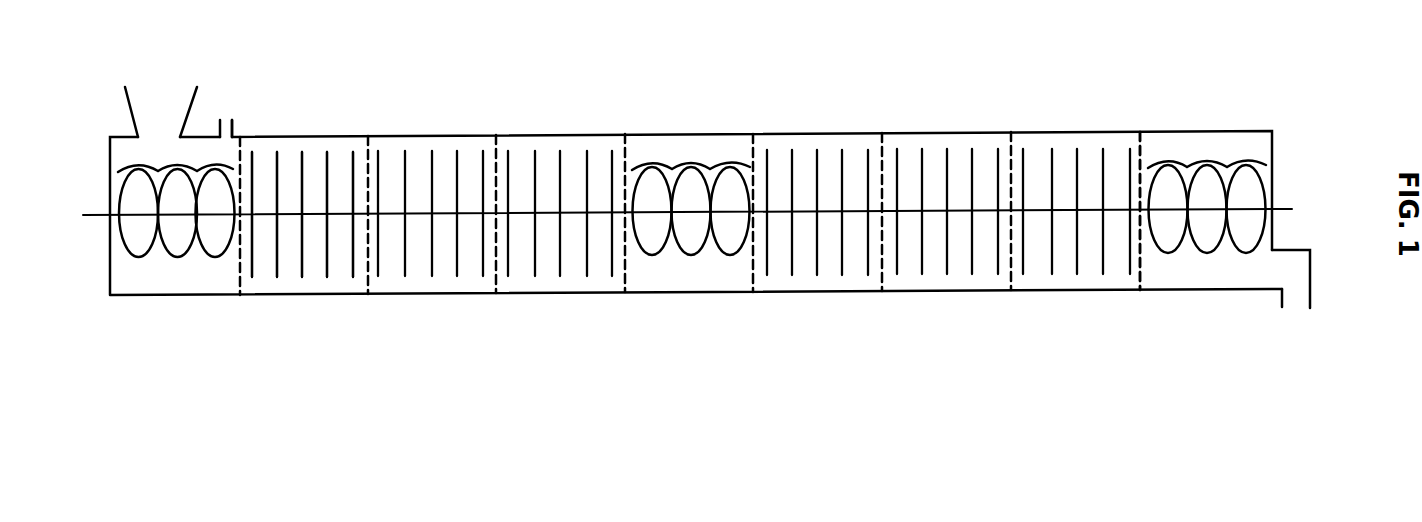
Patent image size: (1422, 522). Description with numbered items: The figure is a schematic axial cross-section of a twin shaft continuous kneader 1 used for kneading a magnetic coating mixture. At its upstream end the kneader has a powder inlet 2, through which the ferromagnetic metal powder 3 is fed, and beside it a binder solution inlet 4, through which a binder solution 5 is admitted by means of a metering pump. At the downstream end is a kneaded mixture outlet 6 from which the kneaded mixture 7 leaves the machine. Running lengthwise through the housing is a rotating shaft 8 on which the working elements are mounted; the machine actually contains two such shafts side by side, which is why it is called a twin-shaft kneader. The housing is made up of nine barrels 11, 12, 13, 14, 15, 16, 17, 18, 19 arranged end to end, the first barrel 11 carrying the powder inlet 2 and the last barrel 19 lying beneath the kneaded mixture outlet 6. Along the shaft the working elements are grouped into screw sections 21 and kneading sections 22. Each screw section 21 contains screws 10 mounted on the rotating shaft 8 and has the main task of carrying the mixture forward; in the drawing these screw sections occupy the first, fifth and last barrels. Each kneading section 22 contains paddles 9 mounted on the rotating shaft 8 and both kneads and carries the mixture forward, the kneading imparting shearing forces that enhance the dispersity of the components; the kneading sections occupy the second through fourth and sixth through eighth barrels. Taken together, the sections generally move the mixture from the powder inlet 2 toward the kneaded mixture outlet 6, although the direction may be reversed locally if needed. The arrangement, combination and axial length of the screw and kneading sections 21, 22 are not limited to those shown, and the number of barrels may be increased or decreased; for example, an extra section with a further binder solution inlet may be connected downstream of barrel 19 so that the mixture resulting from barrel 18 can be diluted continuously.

The twin shaft continuous kneader 1 is at (658, 122).
The powder inlet 2 is at (178, 110).
The ferromagnetic metal powder 3 is at (158, 78).
The binder solution inlet 4 is at (232, 120).
The additive feed direction 5 is at (223, 103).
The kneaded mixture outlet 6 is at (1298, 297).
The kneaded mixture 7 is at (1296, 313).
The rotating shaft 8 is at (97, 213).
The paddles 9 is at (330, 167).
The screws 10 is at (125, 167).
The barrel 11 is at (110, 308).
The barrel 12 is at (368, 307).
The barrel 13 is at (494, 306).
The barrel 14 is at (623, 306).
The barrel 15 is at (751, 305).
The barrel 16 is at (880, 304).
The barrel 17 is at (1009, 304).
The barrel 18 is at (1013, 303).
The barrel 19 is at (1272, 302).
The screw section 21 is at (110, 357).
The kneading section 22 is at (623, 355).